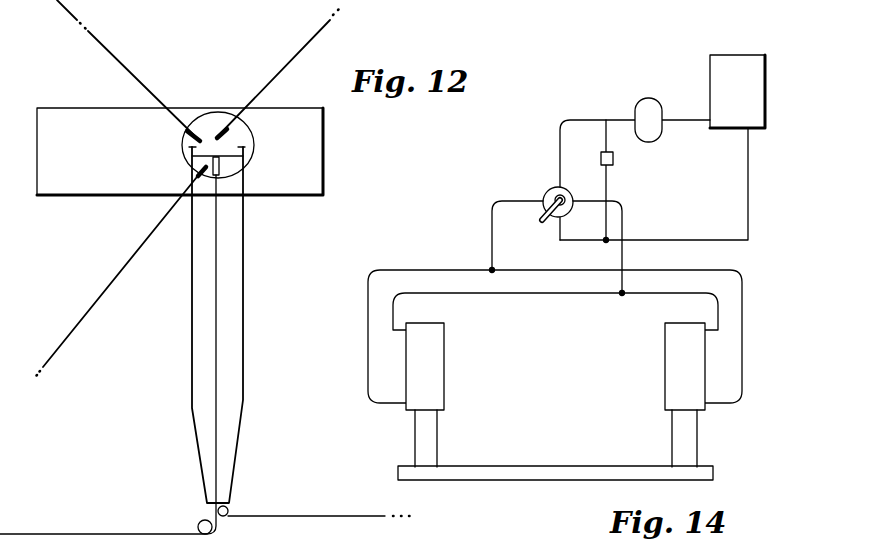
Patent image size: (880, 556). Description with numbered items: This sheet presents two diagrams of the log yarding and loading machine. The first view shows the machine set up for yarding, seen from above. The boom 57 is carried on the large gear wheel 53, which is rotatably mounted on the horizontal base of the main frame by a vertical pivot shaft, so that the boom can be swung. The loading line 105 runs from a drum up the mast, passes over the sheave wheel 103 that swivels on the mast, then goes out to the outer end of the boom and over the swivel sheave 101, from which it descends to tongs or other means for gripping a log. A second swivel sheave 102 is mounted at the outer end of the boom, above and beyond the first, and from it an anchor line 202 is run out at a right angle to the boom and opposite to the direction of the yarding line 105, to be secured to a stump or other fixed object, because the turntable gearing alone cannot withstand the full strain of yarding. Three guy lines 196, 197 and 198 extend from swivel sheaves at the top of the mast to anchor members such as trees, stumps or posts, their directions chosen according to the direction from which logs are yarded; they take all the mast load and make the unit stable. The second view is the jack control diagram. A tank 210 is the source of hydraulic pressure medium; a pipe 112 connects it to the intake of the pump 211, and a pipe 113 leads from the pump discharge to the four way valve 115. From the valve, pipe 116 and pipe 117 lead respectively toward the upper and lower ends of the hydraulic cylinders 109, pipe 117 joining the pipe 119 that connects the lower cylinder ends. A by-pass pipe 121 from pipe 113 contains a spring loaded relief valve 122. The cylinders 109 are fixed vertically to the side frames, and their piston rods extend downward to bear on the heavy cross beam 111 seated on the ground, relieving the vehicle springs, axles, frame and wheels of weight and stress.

In FIG. 12, the gear wheel 53 is at (254, 132).
In FIG. 12, the boom 57 is at (236, 292).
In FIG. 12, the sheave wheel 103 is at (222, 161).
In FIG. 12, the loading line 105 is at (95, 533).
In FIG. 12, the swivel sheave 101 is at (199, 526).
In FIG. 12, the swivel sheave 102 is at (228, 508).
In FIG. 12, the line 202 is at (341, 516).
In FIG. 12, the guy line 196 is at (116, 58).
In FIG. 12, the guy line 198 is at (294, 57).
In FIG. 12, the guy line 197 is at (121, 270).
In FIG. 14, the pipe 113 is at (577, 119).
In FIG. 14, the pipe 112 is at (681, 119).
In FIG. 14, the tank 210 is at (725, 63).
In FIG. 14, the pump 211 is at (648, 99).
In FIG. 14, the by-pass pipe 121 is at (607, 185).
In FIG. 14, the spring loaded relief valve 122 is at (613, 158).
In FIG. 14, the four way valve 115 is at (547, 187).
In FIG. 14, the pipe 116 is at (491, 224).
In FIG. 14, the pipe 117 is at (623, 215).
In FIG. 14, the pipe 119 is at (532, 295).
In FIG. 14, the hydraulic cylinder 109 is at (432, 355).
In FIG. 14, the cross beam 111 is at (541, 467).